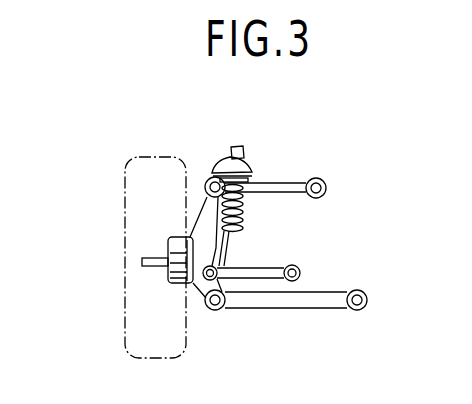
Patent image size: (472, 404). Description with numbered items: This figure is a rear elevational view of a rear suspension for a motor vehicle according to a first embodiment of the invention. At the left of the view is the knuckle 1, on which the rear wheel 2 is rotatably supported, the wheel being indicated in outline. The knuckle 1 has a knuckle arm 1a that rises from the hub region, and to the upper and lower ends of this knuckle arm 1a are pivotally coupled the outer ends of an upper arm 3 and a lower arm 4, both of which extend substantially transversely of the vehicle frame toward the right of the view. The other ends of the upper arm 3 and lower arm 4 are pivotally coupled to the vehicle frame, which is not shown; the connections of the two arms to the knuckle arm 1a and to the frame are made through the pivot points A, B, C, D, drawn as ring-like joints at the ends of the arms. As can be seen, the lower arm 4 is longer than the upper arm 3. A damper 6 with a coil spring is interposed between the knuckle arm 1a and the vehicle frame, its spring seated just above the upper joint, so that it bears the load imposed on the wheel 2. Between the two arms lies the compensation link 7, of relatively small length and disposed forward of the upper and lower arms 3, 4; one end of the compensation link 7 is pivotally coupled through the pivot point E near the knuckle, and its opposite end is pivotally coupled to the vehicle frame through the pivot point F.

The knuckle 1 is at (183, 247).
The knuckle arm 1a is at (207, 215).
The rear wheel 2 is at (145, 178).
The upper arm 3 is at (275, 183).
The lower arm 4 is at (289, 308).
The damper 6 is at (218, 158).
The compensation link 7 is at (249, 268).
The pivot point A is at (208, 181).
The pivot point B is at (318, 178).
The pivot point C is at (214, 310).
The pivot point D is at (361, 310).
The pivot point E is at (206, 281).
The pivot point F is at (297, 266).